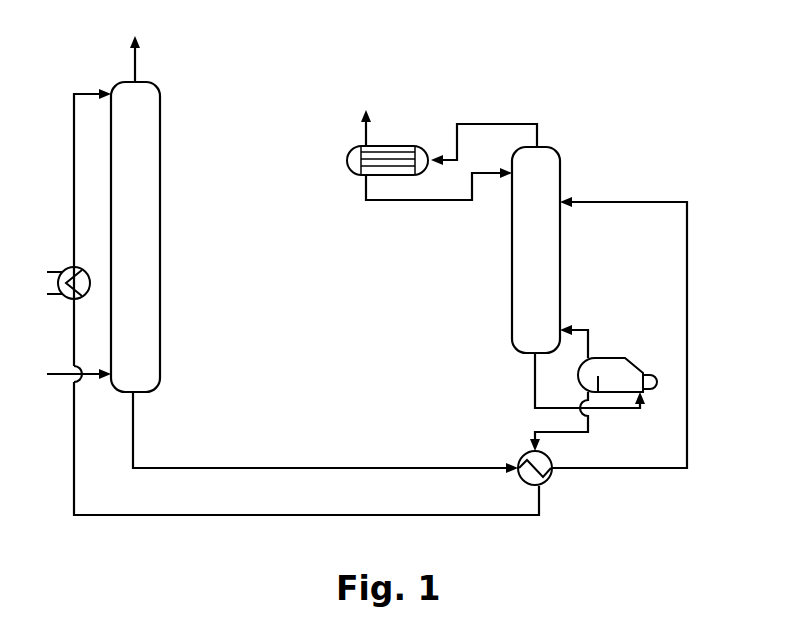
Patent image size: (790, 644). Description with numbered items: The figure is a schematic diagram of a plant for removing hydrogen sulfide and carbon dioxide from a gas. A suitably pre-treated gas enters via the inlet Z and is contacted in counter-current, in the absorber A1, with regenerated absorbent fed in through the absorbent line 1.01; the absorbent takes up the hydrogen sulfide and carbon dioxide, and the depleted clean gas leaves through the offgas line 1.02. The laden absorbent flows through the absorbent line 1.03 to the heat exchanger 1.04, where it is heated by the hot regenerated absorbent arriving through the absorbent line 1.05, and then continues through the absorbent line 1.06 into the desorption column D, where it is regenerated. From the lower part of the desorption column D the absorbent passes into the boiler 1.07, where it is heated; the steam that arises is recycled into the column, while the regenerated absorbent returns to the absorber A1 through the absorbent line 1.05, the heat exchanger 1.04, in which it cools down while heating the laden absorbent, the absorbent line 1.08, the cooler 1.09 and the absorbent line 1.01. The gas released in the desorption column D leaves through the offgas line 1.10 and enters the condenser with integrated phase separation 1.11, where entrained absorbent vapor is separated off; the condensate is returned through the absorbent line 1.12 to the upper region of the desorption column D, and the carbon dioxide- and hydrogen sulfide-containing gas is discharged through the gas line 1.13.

The absorber A1 is at (162, 217).
The desorption column D is at (510, 263).
The inlet Z is at (62, 382).
The absorbent line 1.01 is at (72, 182).
The offgas line 1.02 is at (139, 63).
The absorbent line 1.03 is at (287, 466).
The heat exchanger 1.04 is at (548, 481).
The absorbent line 1.05 is at (572, 434).
The absorbent line 1.06 is at (690, 278).
The boiler 1.07 is at (611, 357).
The absorbent line 1.08 is at (227, 517).
The cooler 1.09 is at (65, 301).
The offgas line 1.10 is at (531, 122).
The condenser with integrated phase separation 1.11 is at (401, 145).
The absorbent line 1.12 is at (405, 203).
The gas line 1.13 is at (362, 128).